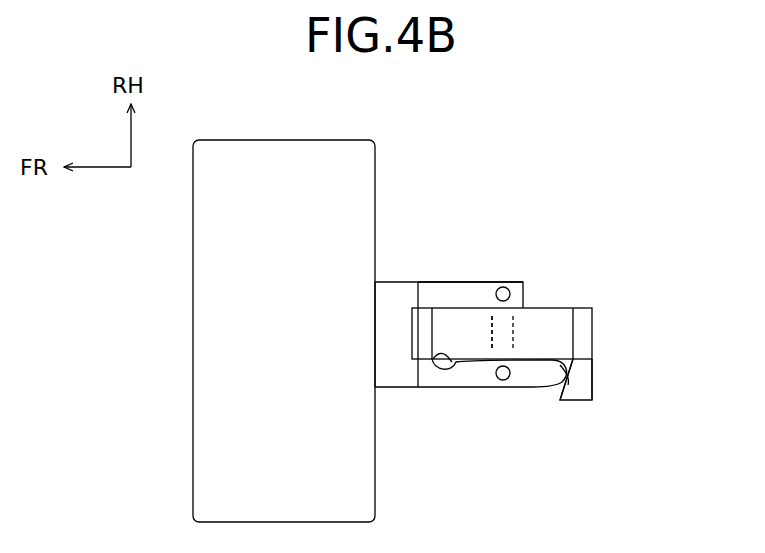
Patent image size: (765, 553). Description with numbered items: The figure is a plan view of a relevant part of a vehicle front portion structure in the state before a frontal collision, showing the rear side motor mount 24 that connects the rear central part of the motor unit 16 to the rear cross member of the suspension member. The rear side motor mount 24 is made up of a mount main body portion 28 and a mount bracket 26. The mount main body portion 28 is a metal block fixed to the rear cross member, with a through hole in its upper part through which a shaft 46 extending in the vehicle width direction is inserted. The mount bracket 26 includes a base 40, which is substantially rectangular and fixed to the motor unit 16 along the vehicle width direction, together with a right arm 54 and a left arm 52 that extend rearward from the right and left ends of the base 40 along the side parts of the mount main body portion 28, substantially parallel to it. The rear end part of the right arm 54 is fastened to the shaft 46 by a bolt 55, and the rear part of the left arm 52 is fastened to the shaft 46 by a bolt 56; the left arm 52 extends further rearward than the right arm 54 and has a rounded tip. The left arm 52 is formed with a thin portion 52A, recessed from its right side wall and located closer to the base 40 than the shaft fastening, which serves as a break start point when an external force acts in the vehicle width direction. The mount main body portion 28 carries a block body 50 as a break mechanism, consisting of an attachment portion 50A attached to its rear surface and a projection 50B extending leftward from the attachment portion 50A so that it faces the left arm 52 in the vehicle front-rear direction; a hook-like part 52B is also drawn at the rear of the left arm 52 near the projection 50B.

The motor unit 16 is at (193, 347).
The rear side motor mount 24 is at (531, 181).
The mount bracket 26 is at (458, 279).
The mount main body portion 28 is at (567, 304).
The base 40 is at (388, 282).
The shaft 46 is at (492, 343).
The block body 50 is at (596, 338).
The attachment portion 50A is at (592, 372).
The projection 50B is at (562, 382).
The left arm 52 is at (525, 390).
The thin portion 52A is at (441, 372).
The hook portion of clip 52B is at (568, 370).
The right arm 54 is at (483, 282).
The bolt 55 is at (513, 288).
The bolt 56 is at (503, 381).